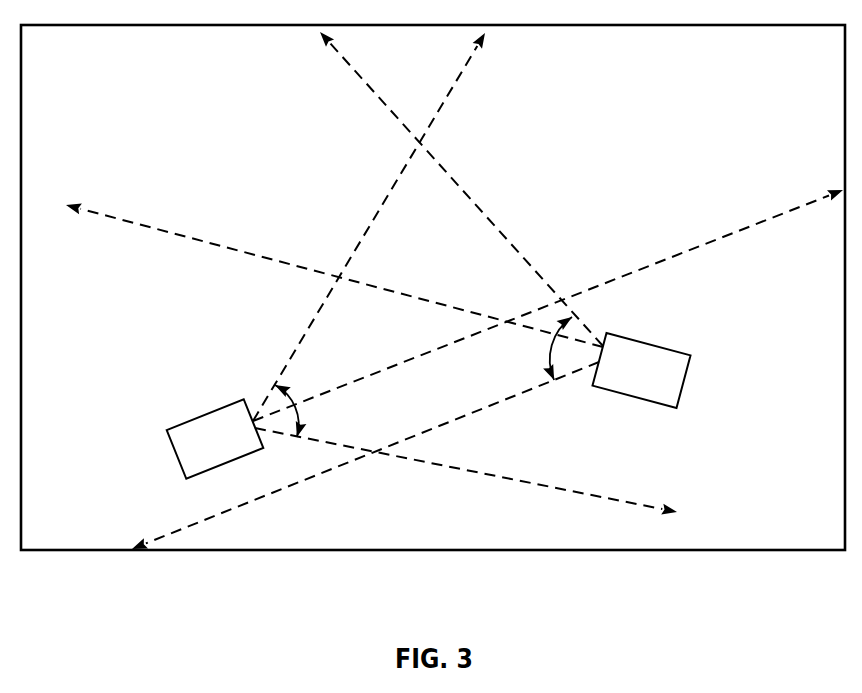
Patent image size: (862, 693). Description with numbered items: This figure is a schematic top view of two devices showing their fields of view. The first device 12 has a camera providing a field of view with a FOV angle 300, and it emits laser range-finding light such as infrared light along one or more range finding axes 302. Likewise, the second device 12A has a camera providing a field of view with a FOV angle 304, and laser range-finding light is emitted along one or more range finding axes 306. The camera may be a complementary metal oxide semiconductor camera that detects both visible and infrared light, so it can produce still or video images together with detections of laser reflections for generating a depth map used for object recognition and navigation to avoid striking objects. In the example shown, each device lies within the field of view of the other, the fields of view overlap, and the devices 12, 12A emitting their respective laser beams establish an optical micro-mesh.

The first device 12 is at (177, 452).
The second device 12A is at (683, 385).
The FOV angle 300 is at (293, 409).
The range finding axes 302 is at (799, 206).
The FOV angle 304 is at (562, 339).
The range finding axes 306 is at (148, 229).